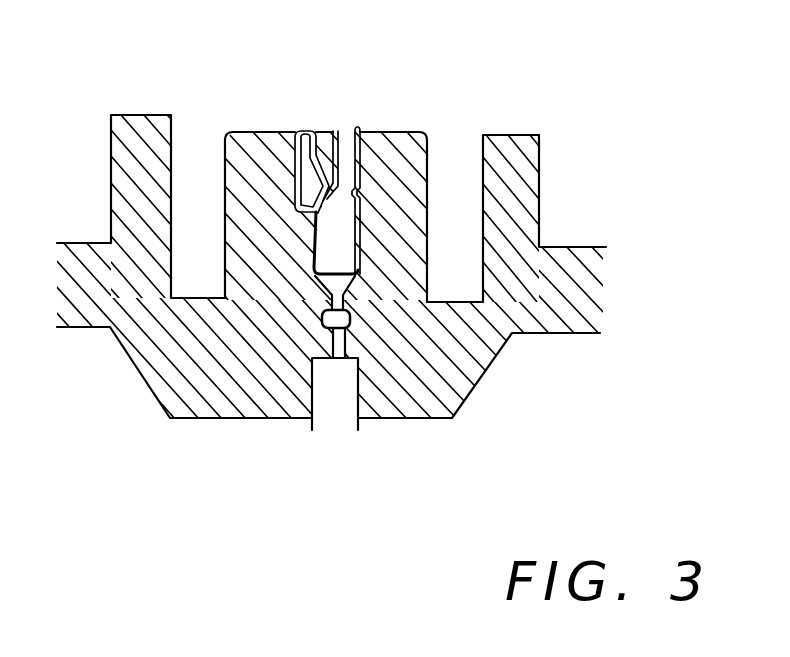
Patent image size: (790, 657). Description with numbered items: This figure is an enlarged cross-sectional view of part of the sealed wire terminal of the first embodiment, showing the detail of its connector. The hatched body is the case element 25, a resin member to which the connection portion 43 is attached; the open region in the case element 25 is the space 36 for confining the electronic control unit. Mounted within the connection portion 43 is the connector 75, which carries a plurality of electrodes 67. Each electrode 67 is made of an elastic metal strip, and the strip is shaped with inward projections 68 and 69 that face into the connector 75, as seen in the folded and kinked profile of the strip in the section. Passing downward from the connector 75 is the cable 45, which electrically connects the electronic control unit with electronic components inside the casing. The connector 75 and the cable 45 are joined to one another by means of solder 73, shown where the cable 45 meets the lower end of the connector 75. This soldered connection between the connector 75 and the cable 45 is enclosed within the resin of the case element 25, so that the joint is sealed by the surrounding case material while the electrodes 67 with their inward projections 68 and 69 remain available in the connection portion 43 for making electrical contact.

The case element 25 is at (461, 376).
The space for confining the electronic control unit 36 is at (438, 117).
The connection portion 43 is at (408, 176).
The cable 45 is at (321, 419).
The electrodes 67 is at (356, 127).
The inward projection 68 is at (348, 131).
The inward projection 69 is at (330, 184).
The solder 73 is at (323, 322).
The connector 75 is at (371, 123).